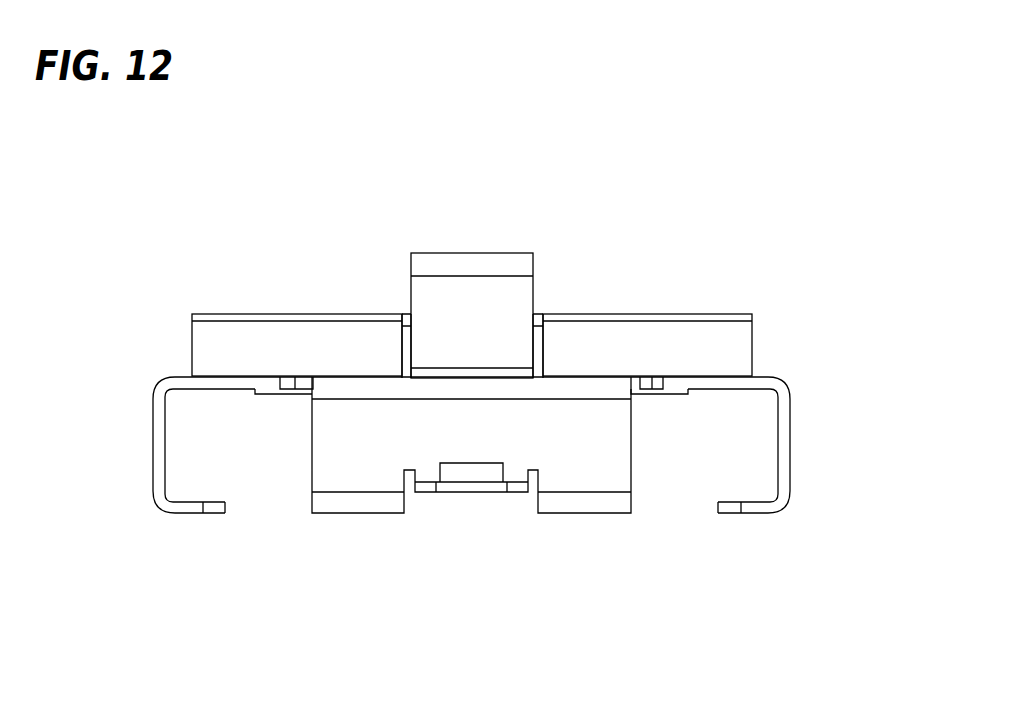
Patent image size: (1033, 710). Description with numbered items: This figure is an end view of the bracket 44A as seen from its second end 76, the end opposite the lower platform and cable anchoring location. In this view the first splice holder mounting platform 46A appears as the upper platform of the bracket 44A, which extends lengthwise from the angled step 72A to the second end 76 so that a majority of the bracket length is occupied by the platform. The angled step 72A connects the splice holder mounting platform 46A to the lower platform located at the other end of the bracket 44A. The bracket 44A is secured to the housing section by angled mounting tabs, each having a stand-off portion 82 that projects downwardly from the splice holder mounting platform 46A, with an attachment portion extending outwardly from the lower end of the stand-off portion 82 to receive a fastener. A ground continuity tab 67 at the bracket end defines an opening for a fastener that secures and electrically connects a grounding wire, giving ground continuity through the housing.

The stand-off portion 82 is at (533, 283).
The first bracket 44A is at (783, 308).
The angled step 72A is at (727, 345).
The second end 76 is at (788, 502).
The first splice holder mounting platform 46A is at (707, 390).
The ground continuity tab 67 is at (470, 493).